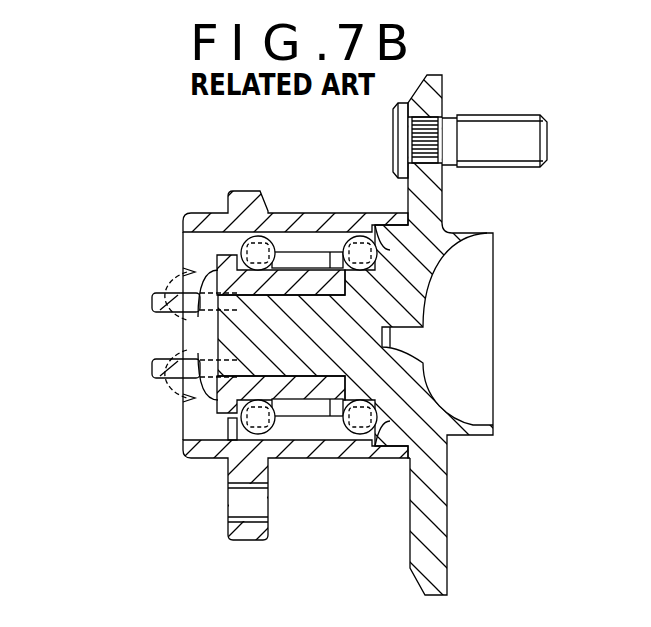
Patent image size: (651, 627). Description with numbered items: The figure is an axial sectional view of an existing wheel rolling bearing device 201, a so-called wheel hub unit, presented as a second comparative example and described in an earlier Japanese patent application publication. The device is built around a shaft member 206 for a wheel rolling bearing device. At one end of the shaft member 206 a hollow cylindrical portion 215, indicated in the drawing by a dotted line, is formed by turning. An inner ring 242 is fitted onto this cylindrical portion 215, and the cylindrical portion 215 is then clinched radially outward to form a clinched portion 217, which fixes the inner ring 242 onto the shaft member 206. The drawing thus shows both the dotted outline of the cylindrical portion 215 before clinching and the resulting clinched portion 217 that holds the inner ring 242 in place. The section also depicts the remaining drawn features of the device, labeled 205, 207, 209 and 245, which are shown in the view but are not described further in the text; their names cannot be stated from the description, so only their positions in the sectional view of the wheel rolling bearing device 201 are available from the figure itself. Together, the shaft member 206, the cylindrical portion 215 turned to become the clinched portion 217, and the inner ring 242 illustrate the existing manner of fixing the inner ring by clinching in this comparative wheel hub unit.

The wheel rolling bearing device 201 is at (170, 152).
The rolling bearing 205 is at (320, 292).
The shaft member 206 is at (395, 300).
The hub bolt 207 is at (443, 86).
The hub flange 209 is at (497, 237).
The hollow cylindrical portion 215 is at (143, 365).
The clinched portion 217 is at (193, 320).
The inner ring 242 is at (197, 458).
The outer ring mounting surface 245 is at (311, 458).